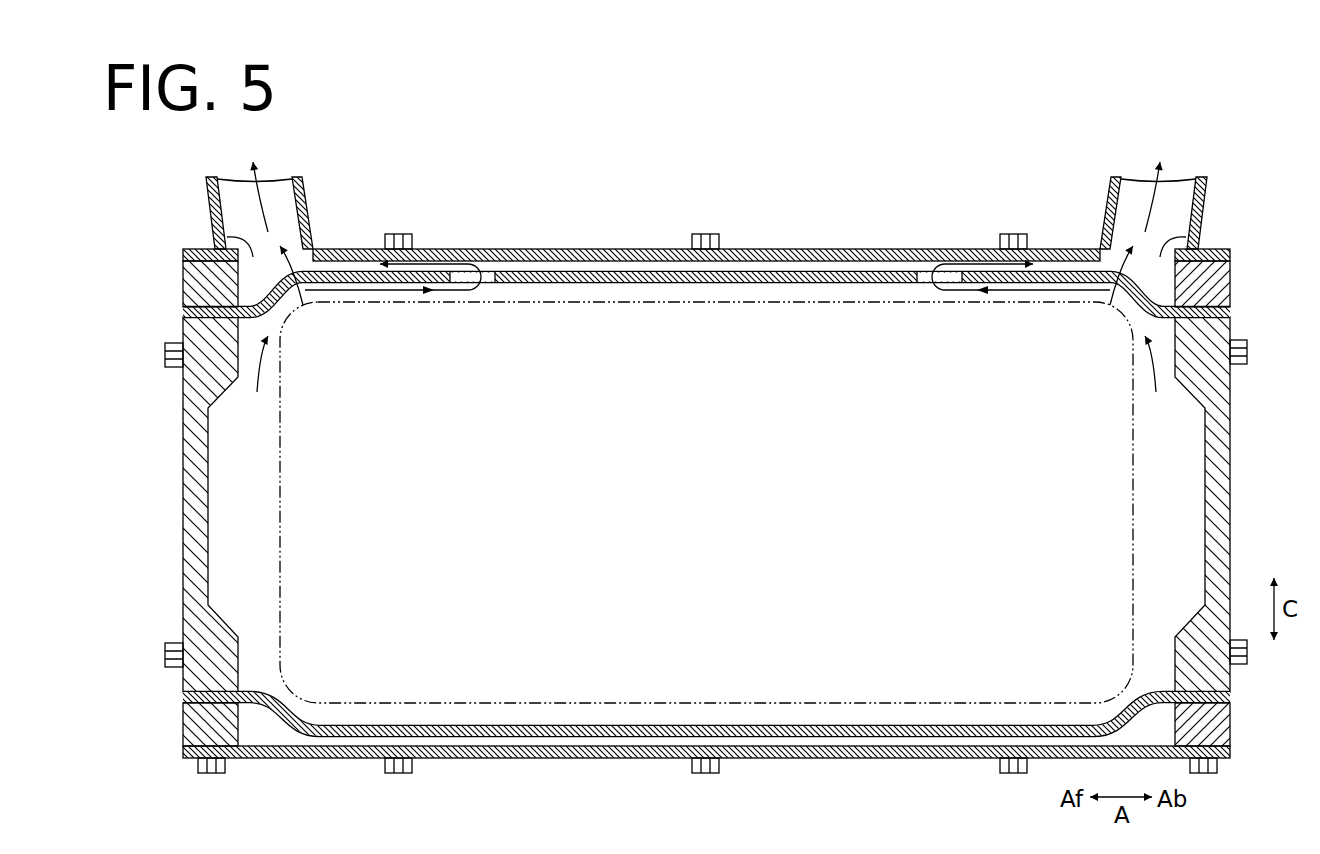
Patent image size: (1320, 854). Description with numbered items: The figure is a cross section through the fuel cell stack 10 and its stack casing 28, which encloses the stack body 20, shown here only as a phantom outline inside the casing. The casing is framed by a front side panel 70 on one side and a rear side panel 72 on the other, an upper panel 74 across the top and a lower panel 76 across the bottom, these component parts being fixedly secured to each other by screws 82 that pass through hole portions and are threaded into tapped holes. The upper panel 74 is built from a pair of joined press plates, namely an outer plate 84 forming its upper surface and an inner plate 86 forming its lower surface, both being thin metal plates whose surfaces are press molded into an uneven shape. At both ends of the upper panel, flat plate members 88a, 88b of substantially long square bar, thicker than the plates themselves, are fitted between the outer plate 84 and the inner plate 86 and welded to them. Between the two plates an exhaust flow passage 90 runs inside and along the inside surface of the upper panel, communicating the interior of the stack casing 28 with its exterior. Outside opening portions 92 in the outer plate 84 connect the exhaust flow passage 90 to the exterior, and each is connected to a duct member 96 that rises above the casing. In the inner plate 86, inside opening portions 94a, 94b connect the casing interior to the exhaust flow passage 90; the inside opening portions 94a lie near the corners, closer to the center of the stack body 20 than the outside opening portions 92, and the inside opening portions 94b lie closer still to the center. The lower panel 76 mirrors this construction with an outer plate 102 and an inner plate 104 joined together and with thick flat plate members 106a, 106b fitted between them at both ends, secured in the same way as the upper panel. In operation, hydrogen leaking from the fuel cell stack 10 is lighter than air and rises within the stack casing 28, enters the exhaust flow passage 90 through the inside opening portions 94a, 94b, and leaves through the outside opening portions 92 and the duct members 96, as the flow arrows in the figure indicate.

The fuel cell stack 10 is at (172, 179).
The stack body 20 is at (276, 487).
The stack casing 28 is at (139, 179).
The front side panel 70 is at (181, 433).
The rear side panel 72 is at (1233, 431).
The upper panel 74 is at (795, 243).
The lower panel 76 is at (358, 762).
The screw 82 is at (707, 234).
The outer plate 84 is at (614, 247).
The inner plate 86 is at (642, 285).
The flat plate member 88a is at (192, 286).
The flat plate member 88b is at (1218, 286).
The exhaust flow passage 90 is at (873, 264).
The outside opening portion 92 is at (215, 229).
The inside opening portion 94a is at (307, 284).
The inside opening portion 94b is at (483, 283).
The duct member 96 is at (302, 191).
The outer plate 102 is at (815, 760).
The inner plate 104 is at (785, 727).
The flat plate member 106a is at (205, 728).
The flat plate member 106b is at (1218, 724).